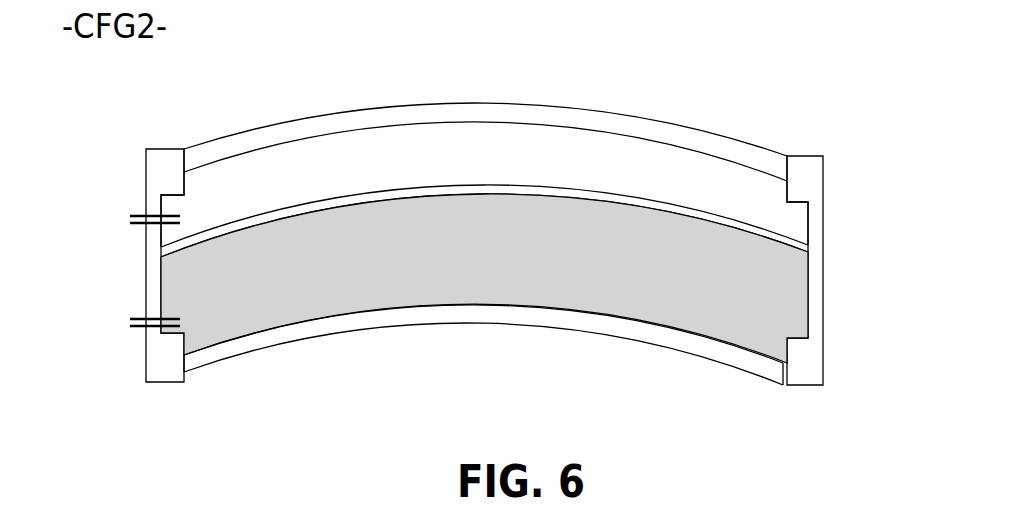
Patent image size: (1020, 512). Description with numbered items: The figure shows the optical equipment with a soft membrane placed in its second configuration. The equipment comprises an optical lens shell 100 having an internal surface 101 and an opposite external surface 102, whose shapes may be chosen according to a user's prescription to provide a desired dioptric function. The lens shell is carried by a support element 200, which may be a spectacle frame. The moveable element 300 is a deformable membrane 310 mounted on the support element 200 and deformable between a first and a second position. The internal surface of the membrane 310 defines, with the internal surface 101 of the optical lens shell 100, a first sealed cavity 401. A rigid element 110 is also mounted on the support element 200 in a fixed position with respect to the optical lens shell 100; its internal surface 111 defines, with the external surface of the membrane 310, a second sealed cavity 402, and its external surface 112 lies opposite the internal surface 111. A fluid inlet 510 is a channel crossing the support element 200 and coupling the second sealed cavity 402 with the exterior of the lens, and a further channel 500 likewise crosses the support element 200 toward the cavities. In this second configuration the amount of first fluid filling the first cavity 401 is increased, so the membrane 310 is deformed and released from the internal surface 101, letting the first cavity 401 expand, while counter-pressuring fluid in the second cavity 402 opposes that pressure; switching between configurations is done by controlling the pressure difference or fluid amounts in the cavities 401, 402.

The optical lens shell 100 is at (483, 359).
The internal surface 101 is at (256, 336).
The external surface 102 is at (401, 335).
The rigid element 110 is at (485, 99).
The internal surface 111 is at (683, 143).
The external surface 112 is at (600, 105).
The support element 200 is at (817, 358).
The moveable element 300 is at (484, 201).
The deformable membrane 310 is at (502, 189).
The first sealed cavity 401 is at (340, 220).
The second sealed cavity 402 is at (285, 153).
The lower connector 500 is at (126, 325).
The fluid inlet 510 is at (126, 221).